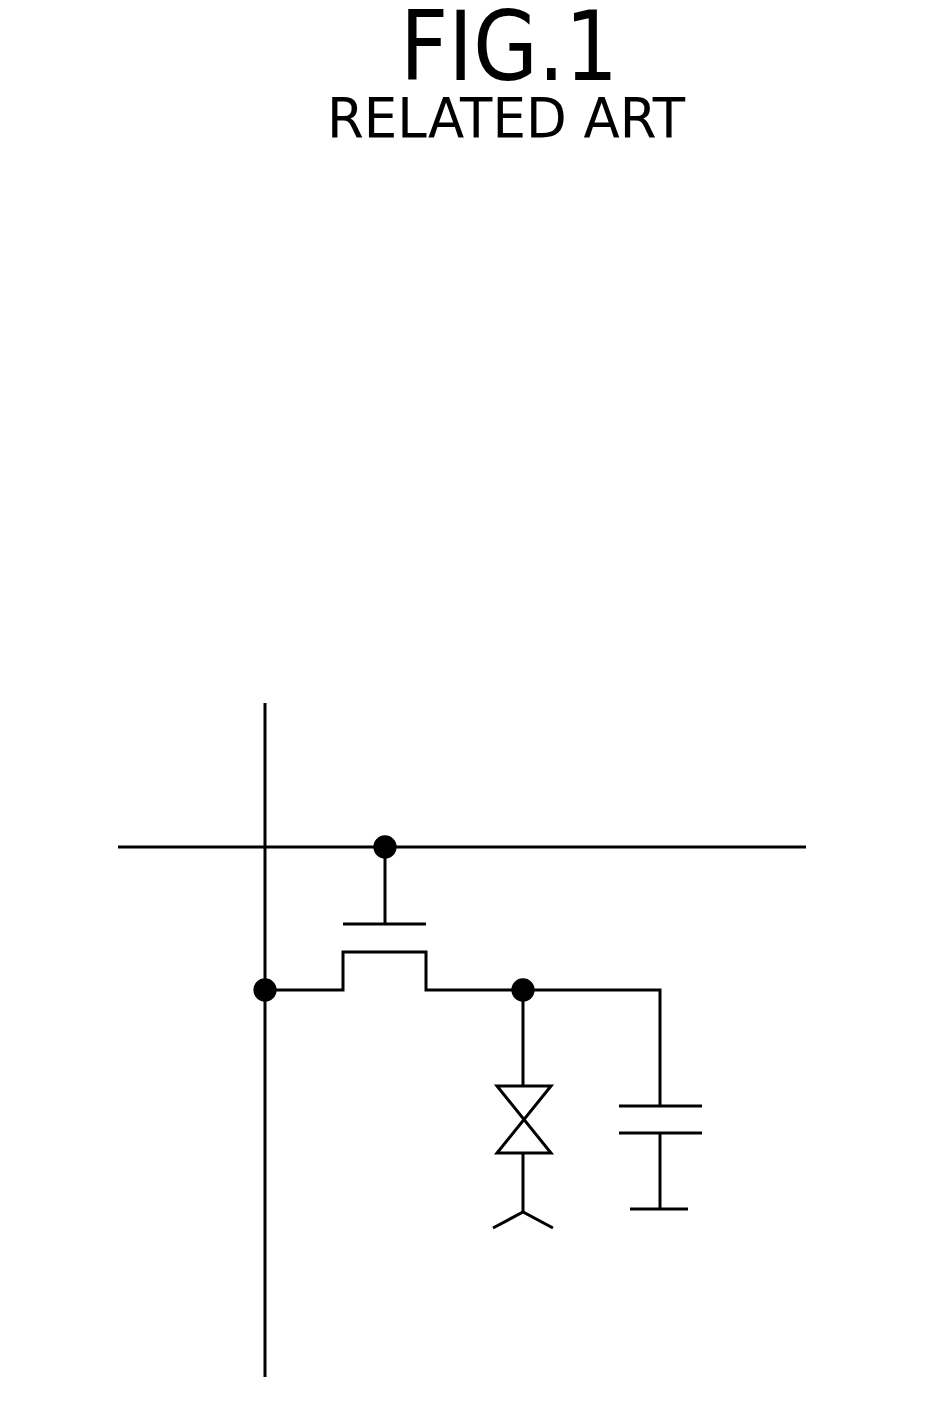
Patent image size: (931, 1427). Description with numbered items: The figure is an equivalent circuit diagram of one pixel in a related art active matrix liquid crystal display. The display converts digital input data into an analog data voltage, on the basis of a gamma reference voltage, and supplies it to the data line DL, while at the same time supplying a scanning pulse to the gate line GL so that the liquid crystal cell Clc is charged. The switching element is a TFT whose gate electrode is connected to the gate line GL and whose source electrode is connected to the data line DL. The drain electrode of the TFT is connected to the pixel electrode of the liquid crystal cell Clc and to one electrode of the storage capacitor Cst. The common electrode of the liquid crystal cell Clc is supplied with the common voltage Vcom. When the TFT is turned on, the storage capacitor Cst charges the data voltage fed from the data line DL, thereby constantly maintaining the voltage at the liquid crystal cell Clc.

The data line DL is at (267, 1008).
The gate line GL is at (424, 851).
The element TFT is at (394, 918).
The liquid crystal cell Clc is at (488, 1071).
The storage capacitor Cst is at (708, 1149).
The common voltage Vcom is at (527, 1216).